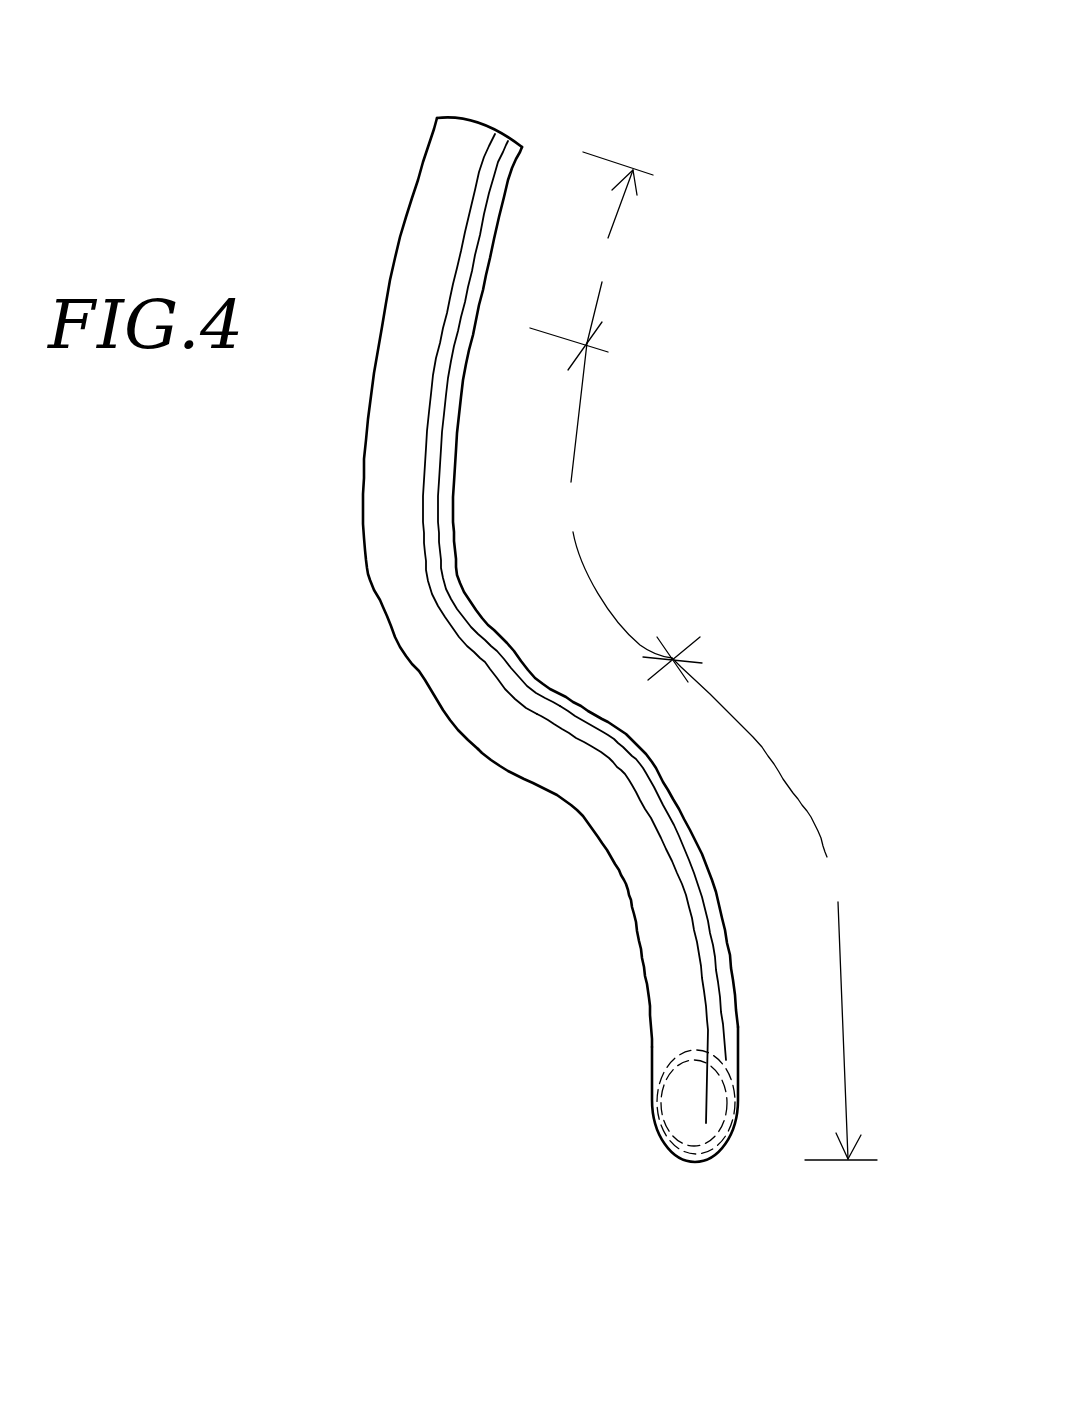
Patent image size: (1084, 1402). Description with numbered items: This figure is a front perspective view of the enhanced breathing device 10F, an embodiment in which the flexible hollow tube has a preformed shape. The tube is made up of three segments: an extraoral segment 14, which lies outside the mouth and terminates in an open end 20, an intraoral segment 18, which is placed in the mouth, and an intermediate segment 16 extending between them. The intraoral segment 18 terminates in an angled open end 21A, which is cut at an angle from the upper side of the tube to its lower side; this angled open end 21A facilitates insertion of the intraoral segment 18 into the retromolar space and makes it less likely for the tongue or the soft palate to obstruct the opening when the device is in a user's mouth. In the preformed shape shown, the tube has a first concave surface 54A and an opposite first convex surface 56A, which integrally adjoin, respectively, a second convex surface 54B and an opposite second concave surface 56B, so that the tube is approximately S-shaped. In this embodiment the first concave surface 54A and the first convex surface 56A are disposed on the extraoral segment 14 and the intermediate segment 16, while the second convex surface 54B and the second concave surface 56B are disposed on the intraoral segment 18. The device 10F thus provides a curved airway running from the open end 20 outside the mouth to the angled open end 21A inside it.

The enhanced breathing device 10F is at (722, 84).
The open end 20 is at (490, 118).
The extraoral segment 14 is at (591, 261).
The intermediate segment 16 is at (625, 512).
The intraoral segment 18 is at (774, 909).
The first concave surface 54A is at (395, 643).
The second convex surface 54B is at (627, 877).
The first convex surface 56A is at (482, 616).
The second concave surface 56B is at (717, 873).
The angled open end 21A is at (687, 1157).